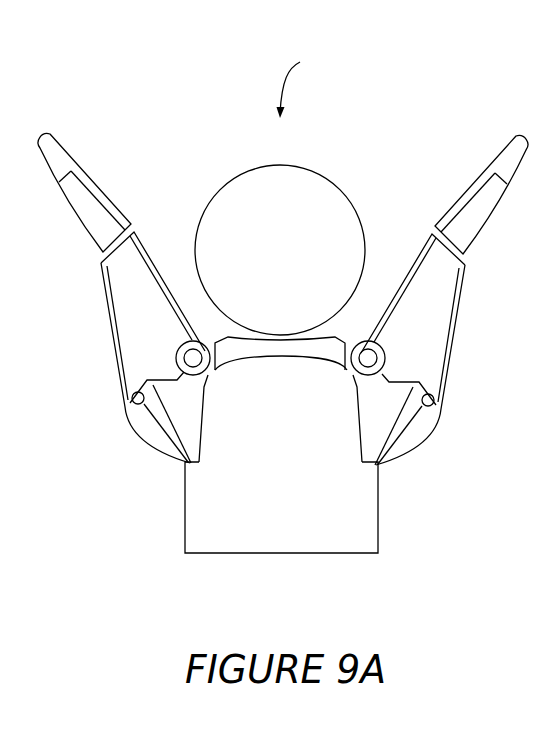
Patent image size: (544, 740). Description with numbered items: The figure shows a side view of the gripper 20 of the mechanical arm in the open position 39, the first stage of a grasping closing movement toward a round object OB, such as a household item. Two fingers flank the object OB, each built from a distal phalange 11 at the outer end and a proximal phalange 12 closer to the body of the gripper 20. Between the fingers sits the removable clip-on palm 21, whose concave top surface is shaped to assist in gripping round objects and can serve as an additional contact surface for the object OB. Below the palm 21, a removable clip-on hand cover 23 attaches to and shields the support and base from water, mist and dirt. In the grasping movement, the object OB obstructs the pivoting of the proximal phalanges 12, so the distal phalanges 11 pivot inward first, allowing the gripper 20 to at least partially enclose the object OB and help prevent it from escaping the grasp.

The gripper 20 is at (141, 104).
The open position 39 is at (306, 75).
The distal phalanges 11 is at (110, 240).
The proximal phalanges 12 is at (157, 324).
The clip-on palm 21 is at (280, 354).
The hand cover 23 is at (295, 461).
The object OB is at (298, 266).